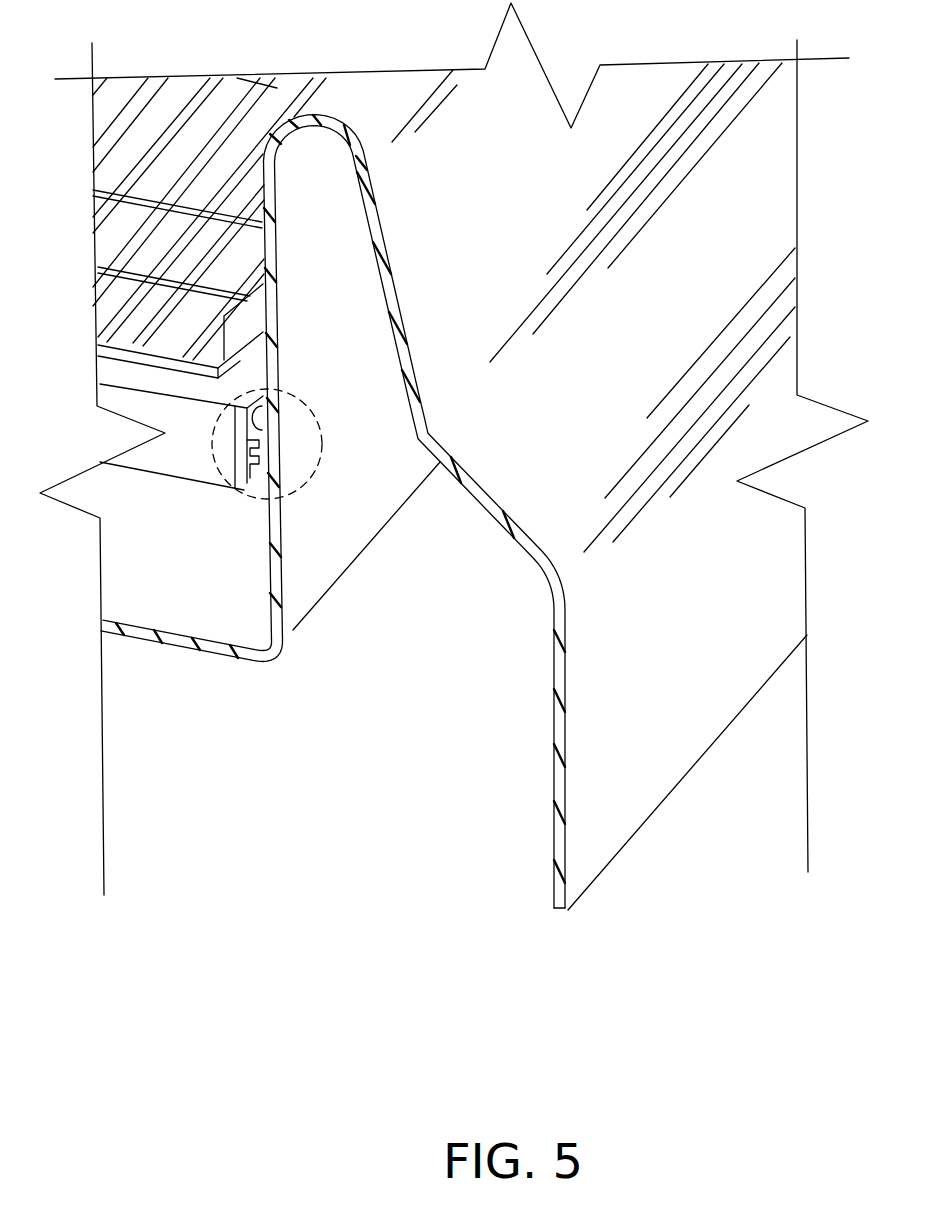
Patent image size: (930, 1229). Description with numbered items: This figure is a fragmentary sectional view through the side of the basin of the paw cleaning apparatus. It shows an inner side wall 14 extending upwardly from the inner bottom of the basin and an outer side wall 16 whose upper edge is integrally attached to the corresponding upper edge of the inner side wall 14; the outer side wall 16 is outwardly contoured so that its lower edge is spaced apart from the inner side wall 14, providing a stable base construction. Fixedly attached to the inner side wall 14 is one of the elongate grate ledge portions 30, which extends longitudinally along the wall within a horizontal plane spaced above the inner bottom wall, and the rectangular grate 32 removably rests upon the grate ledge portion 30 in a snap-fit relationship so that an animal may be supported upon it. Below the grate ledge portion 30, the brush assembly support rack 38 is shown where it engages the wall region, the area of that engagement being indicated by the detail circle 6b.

The detail region 6b is at (322, 478).
The inner side walls 14 is at (382, 403).
The outer side walls 16 is at (703, 689).
The grate ledge portions 30 is at (244, 304).
The grate 32 is at (222, 227).
The brush assembly support rack 38 is at (201, 502).